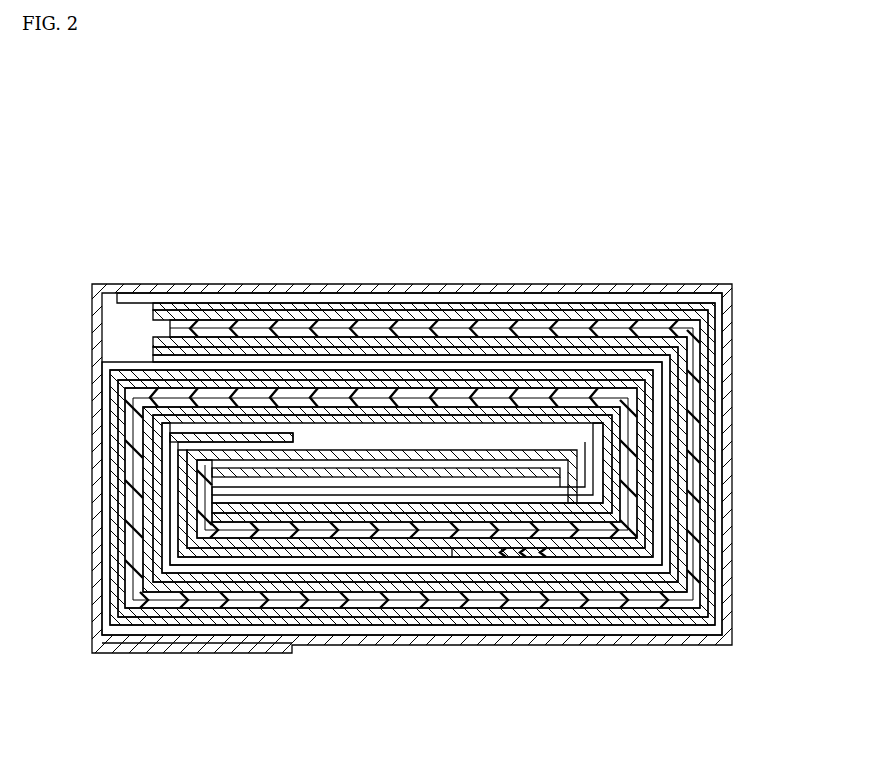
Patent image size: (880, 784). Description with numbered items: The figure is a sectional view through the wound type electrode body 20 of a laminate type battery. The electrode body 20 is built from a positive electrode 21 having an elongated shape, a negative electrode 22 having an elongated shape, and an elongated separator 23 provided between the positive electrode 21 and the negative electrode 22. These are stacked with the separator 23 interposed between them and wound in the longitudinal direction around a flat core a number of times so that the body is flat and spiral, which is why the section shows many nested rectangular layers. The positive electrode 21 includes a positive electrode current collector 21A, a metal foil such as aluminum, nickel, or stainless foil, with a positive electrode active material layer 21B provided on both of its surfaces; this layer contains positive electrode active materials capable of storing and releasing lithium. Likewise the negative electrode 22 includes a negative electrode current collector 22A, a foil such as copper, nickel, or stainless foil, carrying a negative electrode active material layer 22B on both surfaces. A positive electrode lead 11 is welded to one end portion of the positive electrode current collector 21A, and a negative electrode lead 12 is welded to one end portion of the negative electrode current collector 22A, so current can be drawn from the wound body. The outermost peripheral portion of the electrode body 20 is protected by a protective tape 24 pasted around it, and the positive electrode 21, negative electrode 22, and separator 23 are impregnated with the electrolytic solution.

The positive electrode lead 11 is at (245, 442).
The negative electrode lead 12 is at (520, 557).
The electrode body 20 is at (632, 164).
The positive electrode 21 is at (262, 220).
The positive electrode current collector 21A is at (182, 328).
The positive electrode active material layer 21B is at (262, 337).
The negative electrode 22 is at (432, 220).
The negative electrode current collector 22A is at (325, 330).
The negative electrode active material layer 22B is at (428, 355).
The separator 23 is at (583, 318).
The protective tape 24 is at (712, 284).